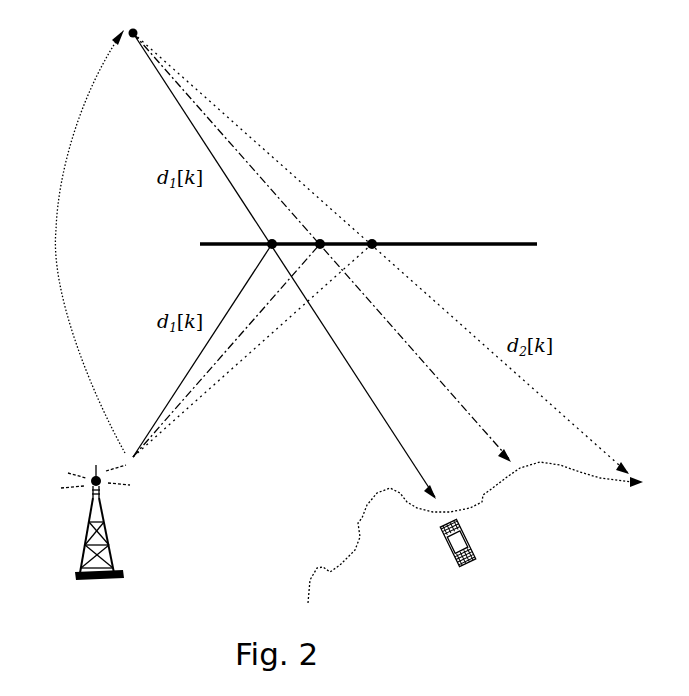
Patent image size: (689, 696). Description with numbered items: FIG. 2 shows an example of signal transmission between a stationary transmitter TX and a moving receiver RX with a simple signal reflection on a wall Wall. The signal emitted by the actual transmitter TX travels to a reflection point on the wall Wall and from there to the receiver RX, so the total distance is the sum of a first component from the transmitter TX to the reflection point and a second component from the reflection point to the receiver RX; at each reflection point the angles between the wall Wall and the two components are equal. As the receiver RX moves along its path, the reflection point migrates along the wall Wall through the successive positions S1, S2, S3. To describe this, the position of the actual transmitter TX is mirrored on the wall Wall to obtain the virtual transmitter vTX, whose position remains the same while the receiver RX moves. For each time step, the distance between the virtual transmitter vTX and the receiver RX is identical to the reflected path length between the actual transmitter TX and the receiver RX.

The transmitter TX is at (93, 542).
The virtual transmitter vTX is at (171, 23).
The receiver RX is at (486, 542).
The wall Wall is at (369, 260).
The reflection point S1 is at (272, 234).
The reflection point S2 is at (324, 234).
The reflection point S3 is at (373, 234).